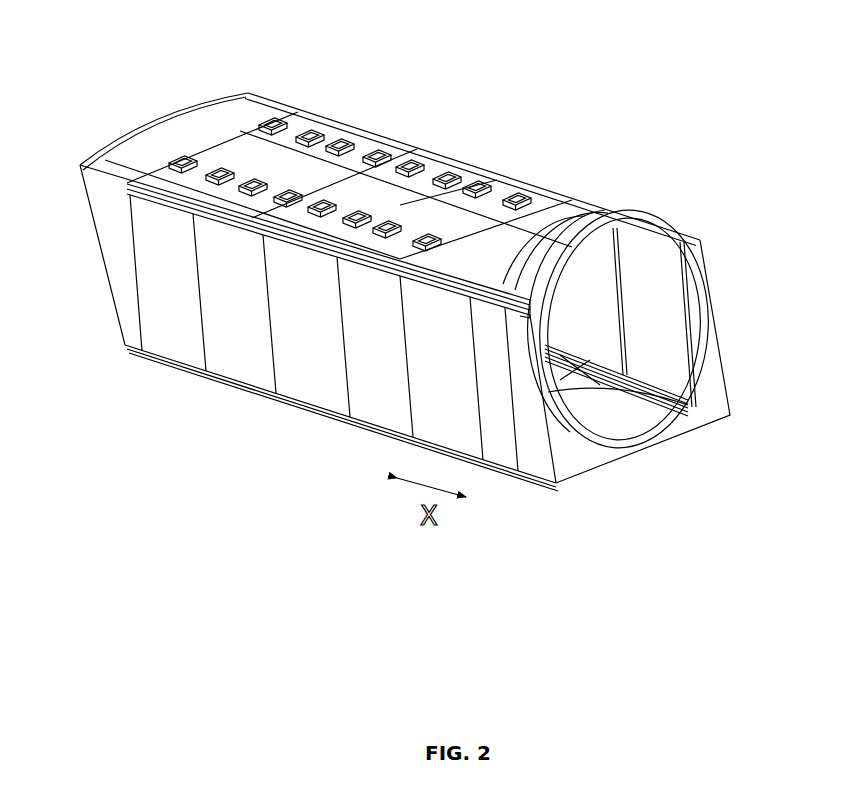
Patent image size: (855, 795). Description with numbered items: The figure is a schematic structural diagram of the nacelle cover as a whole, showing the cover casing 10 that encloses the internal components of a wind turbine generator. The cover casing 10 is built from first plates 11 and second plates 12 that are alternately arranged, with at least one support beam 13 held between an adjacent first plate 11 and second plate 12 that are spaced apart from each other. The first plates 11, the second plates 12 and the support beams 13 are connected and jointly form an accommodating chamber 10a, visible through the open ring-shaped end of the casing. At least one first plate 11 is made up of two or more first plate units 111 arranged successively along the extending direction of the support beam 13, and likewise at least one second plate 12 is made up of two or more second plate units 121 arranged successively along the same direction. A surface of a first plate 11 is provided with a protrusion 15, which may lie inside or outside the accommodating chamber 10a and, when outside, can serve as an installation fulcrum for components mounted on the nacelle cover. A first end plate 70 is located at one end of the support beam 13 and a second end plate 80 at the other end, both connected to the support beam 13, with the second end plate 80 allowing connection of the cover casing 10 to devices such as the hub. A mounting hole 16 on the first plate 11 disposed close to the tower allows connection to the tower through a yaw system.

The cover casing 10 is at (150, 368).
The accommodating chamber 10a is at (650, 299).
The first plate 11 is at (405, 57).
The first plate unit 111 is at (300, 125).
The second plate 12 is at (341, 423).
The second plate unit 121 is at (305, 457).
The support beam 13 is at (538, 186).
The protrusion 15 is at (420, 157).
The mounting hole 16 is at (622, 438).
The first end plate 70 is at (167, 130).
The second end plate 80 is at (707, 417).